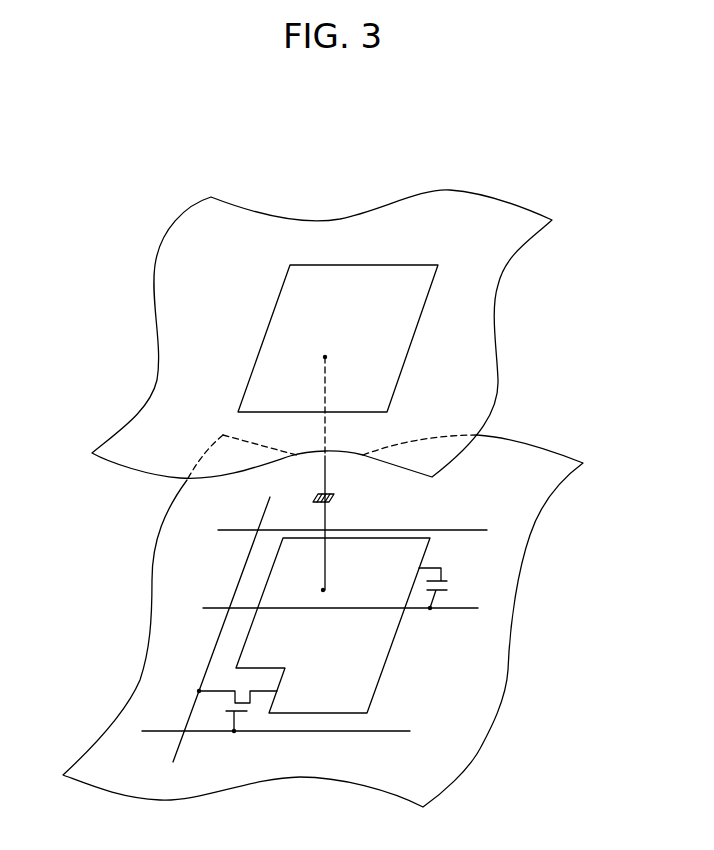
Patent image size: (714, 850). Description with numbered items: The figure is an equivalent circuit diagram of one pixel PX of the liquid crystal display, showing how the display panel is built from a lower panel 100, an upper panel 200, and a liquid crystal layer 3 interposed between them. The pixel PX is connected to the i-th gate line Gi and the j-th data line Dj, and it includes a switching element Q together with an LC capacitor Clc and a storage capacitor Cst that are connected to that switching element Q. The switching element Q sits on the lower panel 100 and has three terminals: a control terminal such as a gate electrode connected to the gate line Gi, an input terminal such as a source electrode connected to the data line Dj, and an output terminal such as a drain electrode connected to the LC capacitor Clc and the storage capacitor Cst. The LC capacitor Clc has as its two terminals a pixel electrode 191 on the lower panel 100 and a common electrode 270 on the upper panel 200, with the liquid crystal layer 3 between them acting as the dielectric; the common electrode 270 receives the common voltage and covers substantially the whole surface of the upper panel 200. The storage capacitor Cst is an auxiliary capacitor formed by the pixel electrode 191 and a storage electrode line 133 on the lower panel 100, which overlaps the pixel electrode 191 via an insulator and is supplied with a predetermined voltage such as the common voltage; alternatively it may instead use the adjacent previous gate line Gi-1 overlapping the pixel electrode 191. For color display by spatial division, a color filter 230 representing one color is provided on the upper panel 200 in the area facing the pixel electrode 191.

The liquid crystal layer 3 is at (78, 536).
The lower panel 100 is at (527, 604).
The storage electrode line 133 is at (459, 611).
The pixel electrode 191 is at (385, 665).
The upper panel 200 is at (340, 334).
The color filter 230 is at (408, 348).
The common electrode 270 is at (495, 314).
The pixel PX is at (460, 142).
The switching element Q is at (237, 711).
The LC capacitor Clc is at (341, 496).
The storage capacitor Cst is at (450, 589).
The data line Dj is at (221, 629).
The previous gate line Gi-1 is at (341, 543).
The gate line Gi is at (275, 717).